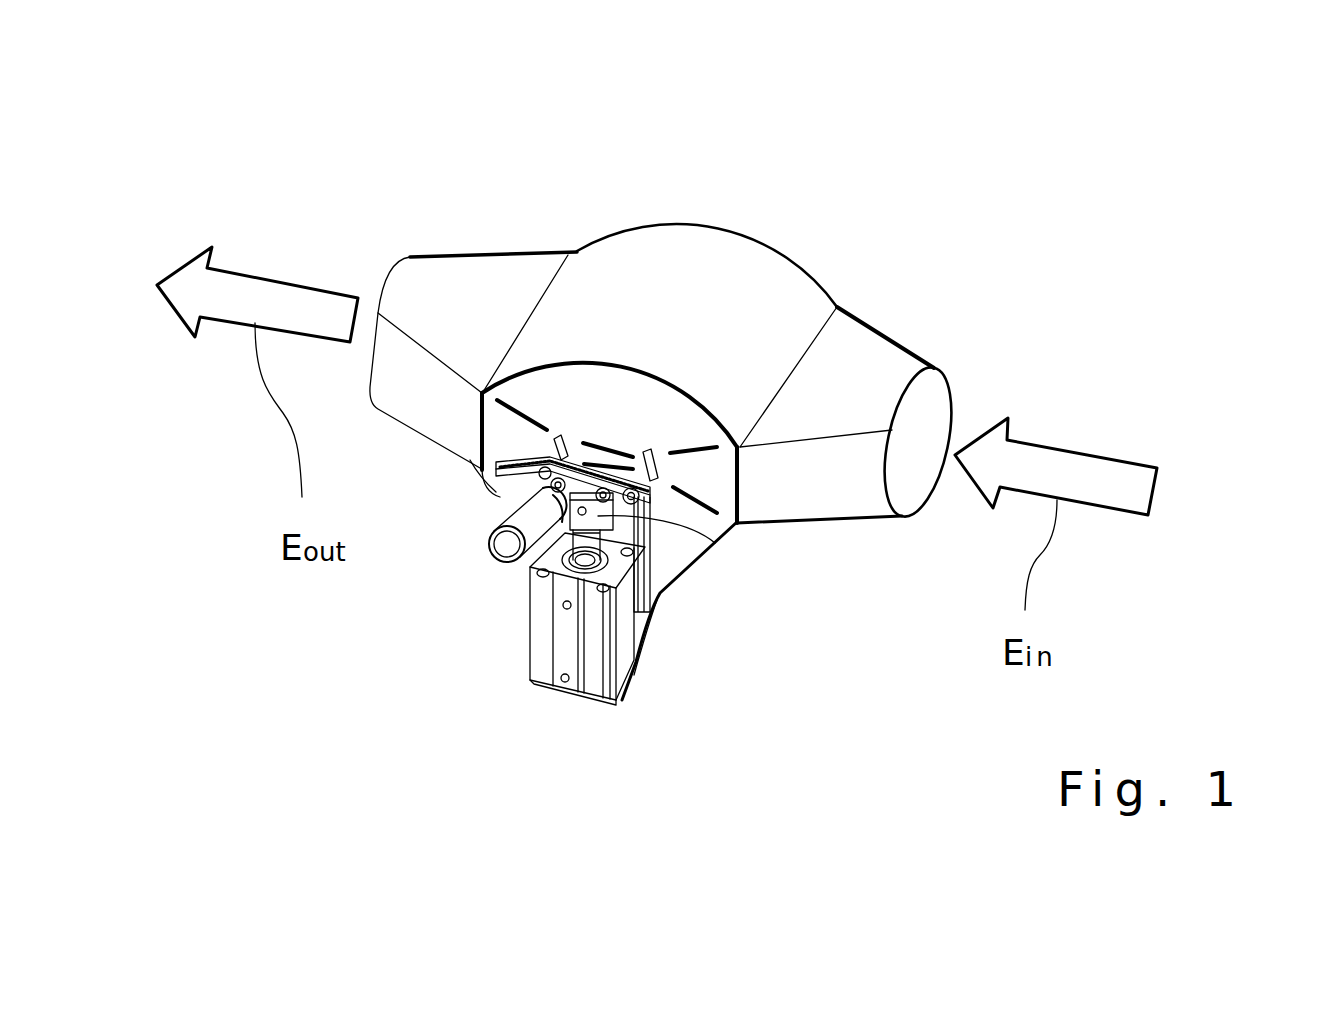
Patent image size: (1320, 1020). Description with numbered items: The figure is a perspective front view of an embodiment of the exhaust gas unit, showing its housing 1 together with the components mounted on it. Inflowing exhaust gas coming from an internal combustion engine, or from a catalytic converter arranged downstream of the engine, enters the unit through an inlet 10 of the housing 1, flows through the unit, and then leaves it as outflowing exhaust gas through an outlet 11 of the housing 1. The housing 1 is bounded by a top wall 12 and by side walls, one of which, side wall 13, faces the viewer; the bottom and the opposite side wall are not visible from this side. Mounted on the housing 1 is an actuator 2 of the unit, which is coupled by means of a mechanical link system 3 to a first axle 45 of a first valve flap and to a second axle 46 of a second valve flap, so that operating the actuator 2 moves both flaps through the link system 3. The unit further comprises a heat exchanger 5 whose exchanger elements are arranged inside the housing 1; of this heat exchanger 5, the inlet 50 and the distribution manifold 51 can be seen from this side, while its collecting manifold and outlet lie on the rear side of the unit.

The housing 1 is at (686, 382).
The inlet 10 is at (866, 373).
The outlet 11 is at (486, 292).
The top wall 12 is at (703, 283).
The side wall 13 is at (557, 392).
The actuator 2 is at (551, 522).
The mechanical link system 3 is at (618, 434).
The first axle 45 is at (645, 467).
The second axle 46 is at (568, 447).
The heat exchanger 5 is at (738, 596).
The inlet 50 is at (530, 507).
The distribution manifold 51 is at (715, 543).